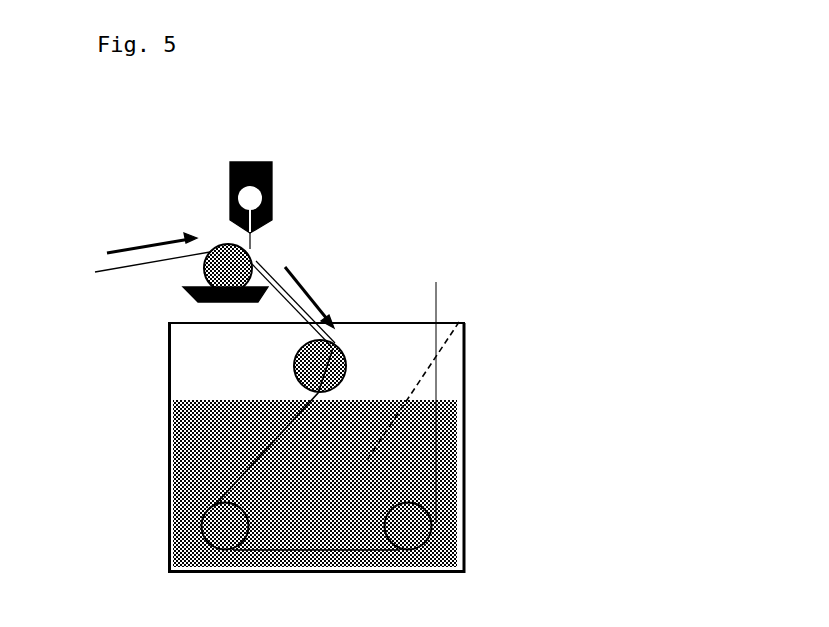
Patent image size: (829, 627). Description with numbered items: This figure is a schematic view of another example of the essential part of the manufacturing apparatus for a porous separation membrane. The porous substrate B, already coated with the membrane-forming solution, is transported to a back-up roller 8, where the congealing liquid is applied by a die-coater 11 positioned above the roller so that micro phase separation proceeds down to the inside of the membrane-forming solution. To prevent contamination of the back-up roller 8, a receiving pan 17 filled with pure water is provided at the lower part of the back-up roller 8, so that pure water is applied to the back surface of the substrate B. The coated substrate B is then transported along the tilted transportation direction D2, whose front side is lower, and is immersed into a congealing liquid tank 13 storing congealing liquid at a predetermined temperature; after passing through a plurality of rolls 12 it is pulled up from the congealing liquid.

The back-up roller 8 is at (252, 258).
The die-coater 11 is at (272, 162).
The rolls 12 is at (335, 345).
The congealing liquid tank 13 is at (466, 325).
The receiving pan 17 is at (190, 295).
The porous substrate B is at (130, 267).
The transportation direction D2 is at (309, 296).